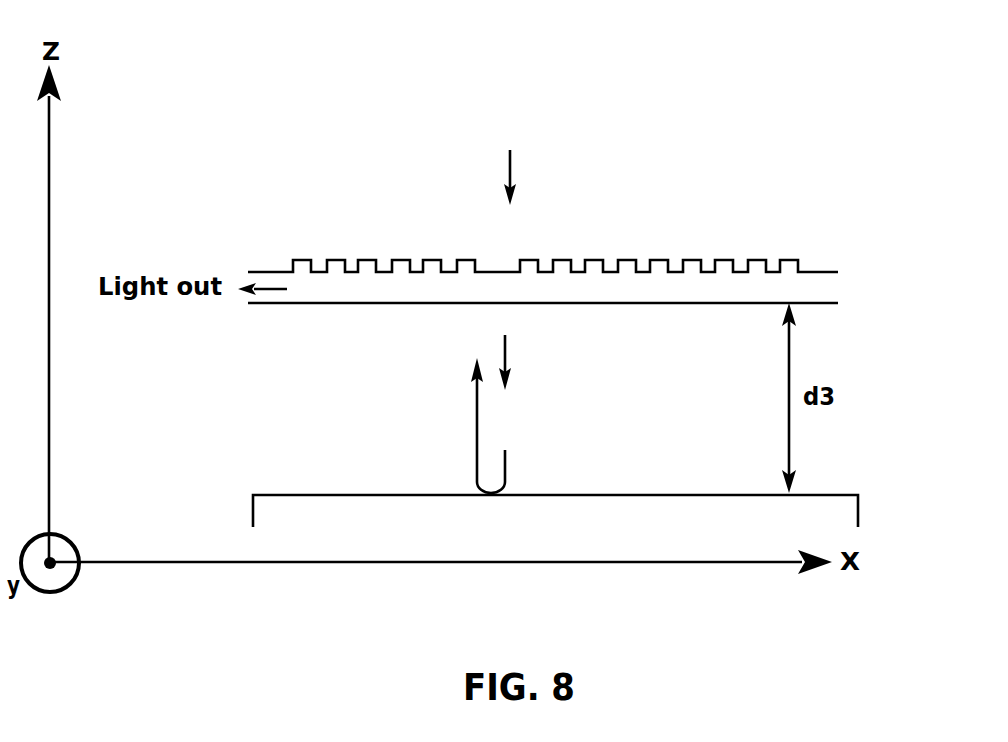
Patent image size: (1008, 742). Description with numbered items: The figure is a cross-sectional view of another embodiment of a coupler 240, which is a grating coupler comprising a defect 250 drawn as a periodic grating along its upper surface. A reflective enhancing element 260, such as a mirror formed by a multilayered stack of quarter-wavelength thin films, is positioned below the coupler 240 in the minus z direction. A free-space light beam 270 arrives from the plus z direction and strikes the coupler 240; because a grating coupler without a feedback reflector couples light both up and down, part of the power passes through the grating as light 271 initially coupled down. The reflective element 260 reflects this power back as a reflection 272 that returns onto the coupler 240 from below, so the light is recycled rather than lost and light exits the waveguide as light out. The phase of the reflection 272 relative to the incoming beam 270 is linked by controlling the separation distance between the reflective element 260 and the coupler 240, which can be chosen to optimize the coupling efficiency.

The coupler 240 is at (571, 218).
The defect 250 is at (500, 272).
The reflective enhancing element 260 is at (827, 492).
The free-space light beam 270 is at (514, 183).
The light initially coupled down 271 is at (507, 355).
The reflection 272 is at (477, 427).